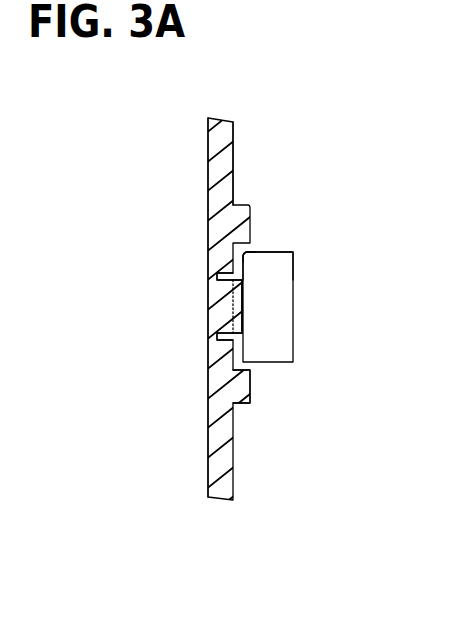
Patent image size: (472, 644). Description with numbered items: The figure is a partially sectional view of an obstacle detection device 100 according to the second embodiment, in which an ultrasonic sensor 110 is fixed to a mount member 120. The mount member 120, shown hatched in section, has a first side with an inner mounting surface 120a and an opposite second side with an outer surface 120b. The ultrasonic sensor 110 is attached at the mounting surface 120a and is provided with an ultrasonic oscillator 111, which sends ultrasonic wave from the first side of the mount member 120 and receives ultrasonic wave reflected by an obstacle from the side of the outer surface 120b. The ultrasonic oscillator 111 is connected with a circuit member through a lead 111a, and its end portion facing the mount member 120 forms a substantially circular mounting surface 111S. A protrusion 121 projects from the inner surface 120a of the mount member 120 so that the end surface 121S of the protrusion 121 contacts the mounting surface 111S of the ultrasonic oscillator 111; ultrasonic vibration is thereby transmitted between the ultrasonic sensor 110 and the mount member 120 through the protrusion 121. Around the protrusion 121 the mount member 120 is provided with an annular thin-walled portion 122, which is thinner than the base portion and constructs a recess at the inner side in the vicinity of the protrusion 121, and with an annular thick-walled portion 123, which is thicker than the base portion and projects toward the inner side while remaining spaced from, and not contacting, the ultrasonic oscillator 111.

The obstacle detection device 100 is at (323, 181).
The ultrasonic sensor 110 is at (305, 353).
The ultrasonic oscillator 111 is at (277, 317).
The lead 111a is at (245, 249).
The mounting surface 111S is at (239, 253).
The mount member 120 is at (204, 143).
The mounting surface 120a is at (234, 132).
The outer surface 120b is at (207, 175).
The protrusion 121 is at (237, 312).
The end surface 121S is at (243, 320).
The thin-walled portion 122 is at (212, 338).
The thick-walled portion 123 is at (250, 389).